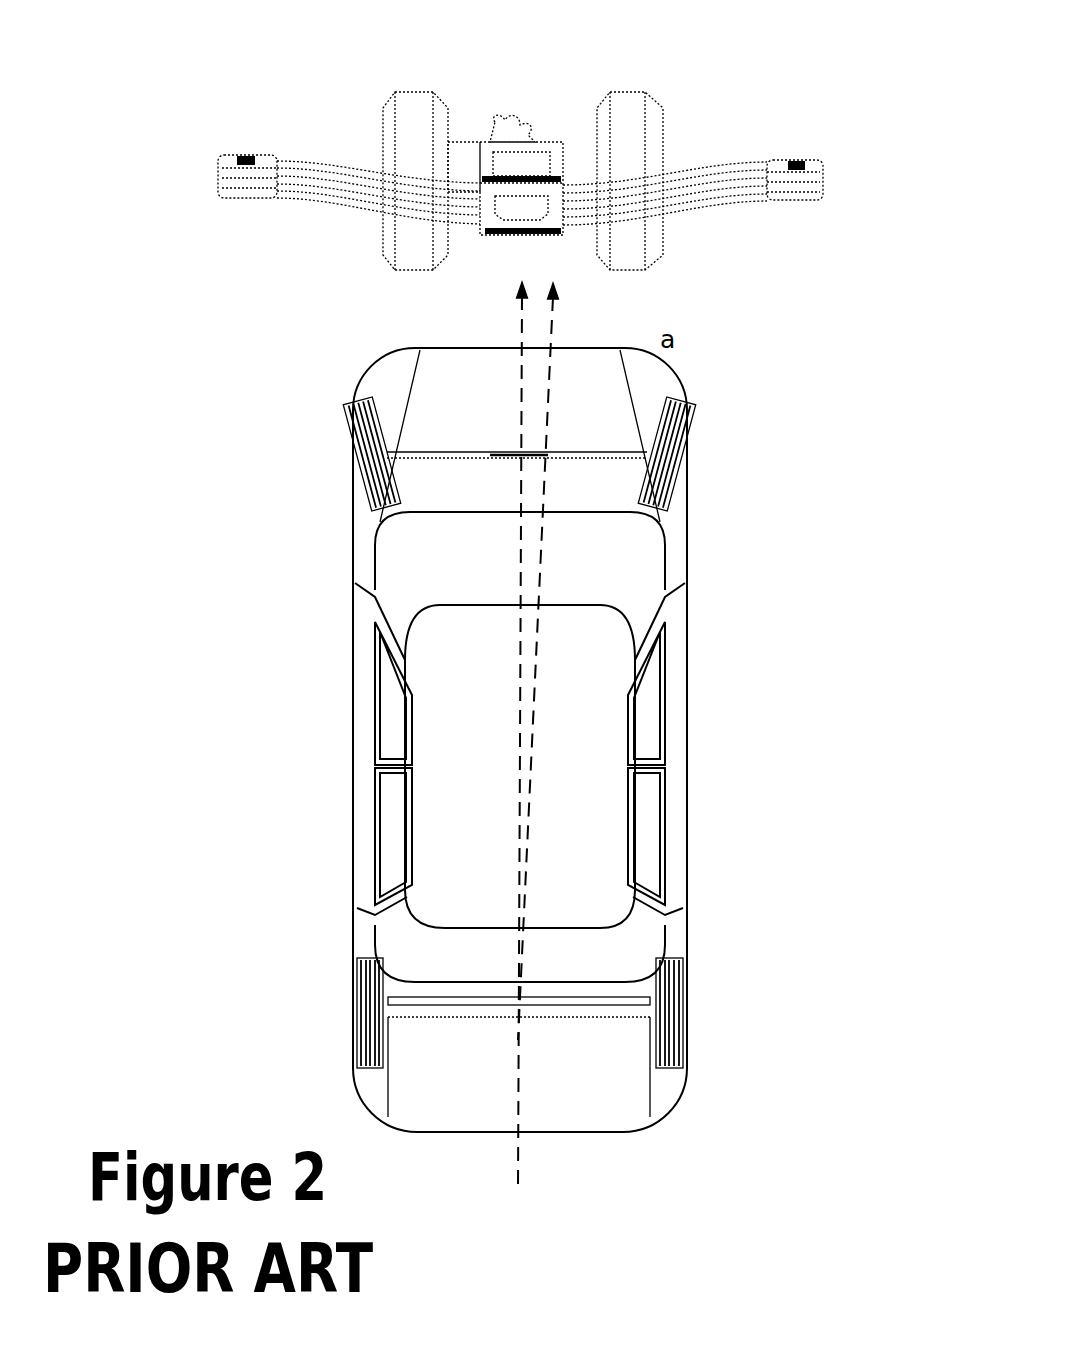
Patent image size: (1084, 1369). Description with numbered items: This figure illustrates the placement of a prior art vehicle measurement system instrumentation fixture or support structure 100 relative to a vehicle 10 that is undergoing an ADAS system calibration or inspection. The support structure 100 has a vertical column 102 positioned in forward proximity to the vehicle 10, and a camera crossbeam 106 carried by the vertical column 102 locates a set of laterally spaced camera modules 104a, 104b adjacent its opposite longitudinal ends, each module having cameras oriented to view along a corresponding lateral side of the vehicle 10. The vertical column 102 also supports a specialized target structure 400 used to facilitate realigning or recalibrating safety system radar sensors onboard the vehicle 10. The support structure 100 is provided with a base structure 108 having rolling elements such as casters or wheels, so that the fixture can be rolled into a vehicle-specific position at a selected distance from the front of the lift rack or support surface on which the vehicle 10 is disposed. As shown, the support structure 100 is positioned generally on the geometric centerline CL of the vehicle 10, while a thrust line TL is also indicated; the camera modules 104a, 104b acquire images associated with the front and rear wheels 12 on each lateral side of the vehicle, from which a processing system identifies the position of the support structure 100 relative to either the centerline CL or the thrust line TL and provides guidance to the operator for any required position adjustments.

The support structure 100 is at (320, 118).
The vertical column 102 is at (538, 140).
The camera module 104a is at (793, 177).
The camera module 104b is at (248, 172).
The camera crossbeam 106 is at (673, 180).
The base structure 108 is at (638, 147).
The target structure 400 is at (538, 233).
The vehicle 10 is at (704, 880).
The wheels 12 is at (343, 437).
The vehicle centerline CL is at (520, 653).
The thrust line TL is at (540, 690).